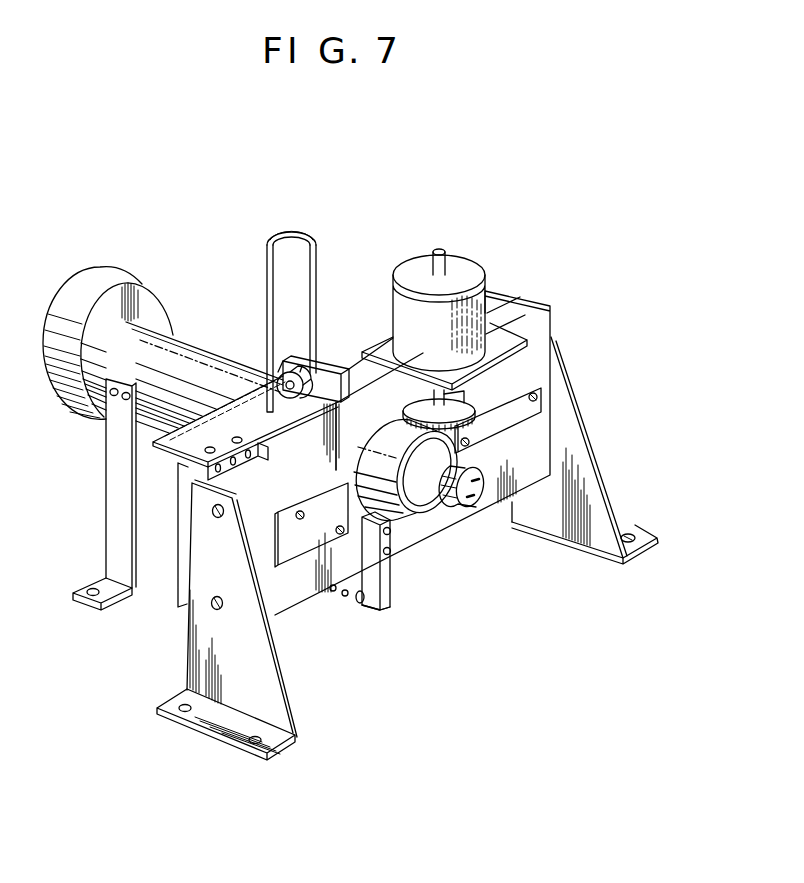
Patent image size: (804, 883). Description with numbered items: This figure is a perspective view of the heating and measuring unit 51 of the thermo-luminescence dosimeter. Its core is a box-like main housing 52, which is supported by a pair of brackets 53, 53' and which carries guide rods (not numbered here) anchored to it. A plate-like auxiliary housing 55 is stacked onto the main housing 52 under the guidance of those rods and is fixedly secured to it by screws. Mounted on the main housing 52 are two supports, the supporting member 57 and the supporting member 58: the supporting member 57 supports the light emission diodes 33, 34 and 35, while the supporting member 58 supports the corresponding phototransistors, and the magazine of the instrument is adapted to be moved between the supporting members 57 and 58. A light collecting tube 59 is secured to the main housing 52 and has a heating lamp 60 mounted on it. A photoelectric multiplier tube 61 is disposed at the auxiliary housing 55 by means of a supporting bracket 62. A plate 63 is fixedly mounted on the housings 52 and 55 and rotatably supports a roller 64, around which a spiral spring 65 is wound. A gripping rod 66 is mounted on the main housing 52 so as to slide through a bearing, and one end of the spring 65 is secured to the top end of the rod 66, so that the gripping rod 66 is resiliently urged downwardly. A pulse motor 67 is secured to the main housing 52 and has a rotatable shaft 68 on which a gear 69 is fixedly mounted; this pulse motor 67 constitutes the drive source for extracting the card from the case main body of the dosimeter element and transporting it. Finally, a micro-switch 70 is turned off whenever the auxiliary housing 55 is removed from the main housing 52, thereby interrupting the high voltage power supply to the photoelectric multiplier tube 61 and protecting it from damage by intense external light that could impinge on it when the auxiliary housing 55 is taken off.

The heating and measuring unit 51 is at (350, 494).
The main housing 52 is at (528, 303).
The bracket 53 is at (237, 737).
The bracket 53' is at (585, 450).
The auxiliary housing 55 is at (494, 292).
The supporting member 57 is at (387, 594).
The supporting member 58 is at (279, 632).
The light collecting tube 59 is at (432, 503).
The heating lamp 60 is at (443, 500).
The photoelectric multiplier tube 61 is at (200, 353).
The supporting bracket 62 is at (104, 522).
The plate 63 is at (320, 360).
The roller 64 is at (283, 372).
The spiral spring 65 is at (317, 278).
The gripping rod 66 is at (270, 277).
The pulse motor 67 is at (457, 263).
The rotatable shaft 68 is at (466, 394).
The gear 69 is at (478, 428).
The micro-switch 70 is at (185, 462).
The light emission diode 33 is at (337, 588).
The light emission diode 34 is at (363, 608).
The light emission diode 35 is at (348, 595).